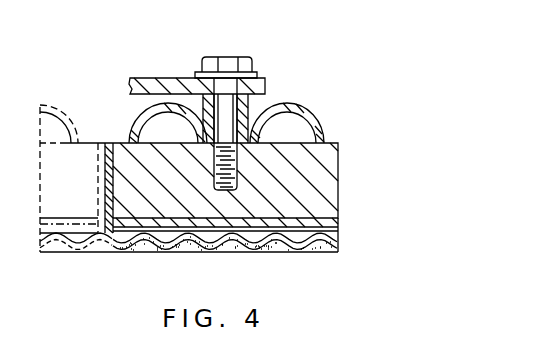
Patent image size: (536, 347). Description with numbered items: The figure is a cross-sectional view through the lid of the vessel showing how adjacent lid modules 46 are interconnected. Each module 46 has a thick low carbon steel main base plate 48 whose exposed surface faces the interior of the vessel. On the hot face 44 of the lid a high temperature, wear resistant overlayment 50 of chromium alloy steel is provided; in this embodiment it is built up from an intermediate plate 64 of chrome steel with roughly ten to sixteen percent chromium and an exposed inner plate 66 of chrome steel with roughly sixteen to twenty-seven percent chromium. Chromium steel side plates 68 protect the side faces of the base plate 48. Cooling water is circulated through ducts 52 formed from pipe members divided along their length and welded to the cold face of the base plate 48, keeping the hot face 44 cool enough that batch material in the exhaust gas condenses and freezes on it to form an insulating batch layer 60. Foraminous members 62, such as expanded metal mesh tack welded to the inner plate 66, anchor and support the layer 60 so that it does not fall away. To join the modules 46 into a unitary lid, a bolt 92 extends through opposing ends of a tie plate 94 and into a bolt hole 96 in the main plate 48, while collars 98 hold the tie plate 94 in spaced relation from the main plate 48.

The hot face 44 is at (312, 251).
The lid module 46 is at (290, 63).
The main base plate 48 is at (322, 165).
The overlayment 50 is at (158, 251).
The ducts 52 is at (311, 114).
The batch layer 60 is at (217, 251).
The foraminous members 62 is at (226, 245).
The intermediate plate 64 is at (318, 213).
The inner plate 66 is at (338, 216).
The side plates 68 is at (107, 172).
The bolt 92 is at (227, 57).
The tie plate 94 is at (150, 78).
The bolt hole 96 is at (222, 189).
The collars 98 is at (248, 110).